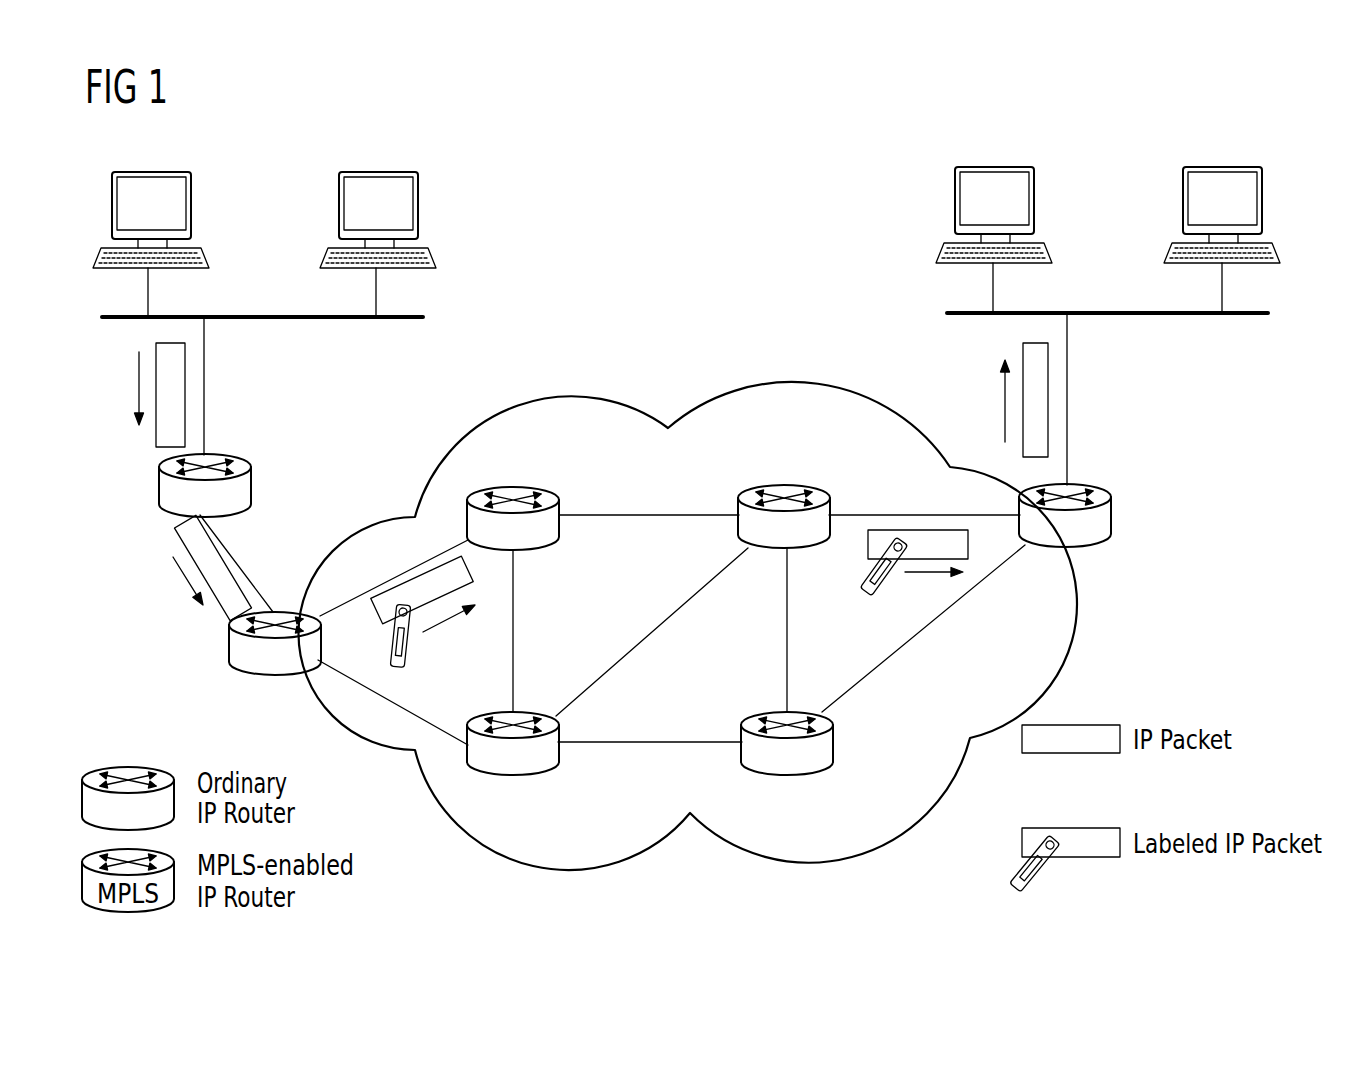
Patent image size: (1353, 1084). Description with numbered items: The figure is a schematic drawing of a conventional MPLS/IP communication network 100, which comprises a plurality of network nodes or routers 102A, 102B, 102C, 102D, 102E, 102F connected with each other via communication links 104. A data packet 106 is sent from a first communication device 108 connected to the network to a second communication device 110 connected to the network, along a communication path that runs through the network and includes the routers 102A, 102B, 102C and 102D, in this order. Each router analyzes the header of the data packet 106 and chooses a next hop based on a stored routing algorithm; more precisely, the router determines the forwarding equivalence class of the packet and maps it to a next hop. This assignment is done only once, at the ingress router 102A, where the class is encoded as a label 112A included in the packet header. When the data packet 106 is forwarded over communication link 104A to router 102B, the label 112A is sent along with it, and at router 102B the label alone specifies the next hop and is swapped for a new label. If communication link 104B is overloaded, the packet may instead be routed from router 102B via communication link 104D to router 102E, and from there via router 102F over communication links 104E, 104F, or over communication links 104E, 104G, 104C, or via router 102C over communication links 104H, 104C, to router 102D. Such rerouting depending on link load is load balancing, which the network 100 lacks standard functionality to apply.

The MPLS/IP communication network 100 is at (790, 381).
The router 102A is at (276, 677).
The router 102B is at (516, 486).
The router 102C is at (788, 485).
The router 102D is at (1111, 514).
The router 102E is at (513, 778).
The router 102F is at (787, 777).
The communication link 104 is at (440, 723).
The communication link 104A is at (394, 604).
The communication link 104B is at (590, 514).
The communication link 104C is at (848, 514).
The communication link 104D is at (514, 631).
The communication link 104E is at (663, 740).
The communication link 104F is at (865, 681).
The communication link 104G is at (788, 633).
The communication link 104H is at (668, 630).
The data packet 106 is at (155, 435).
The first communication device 108 is at (191, 203).
The second communication device 110 is at (1036, 198).
The label 112A is at (413, 643).